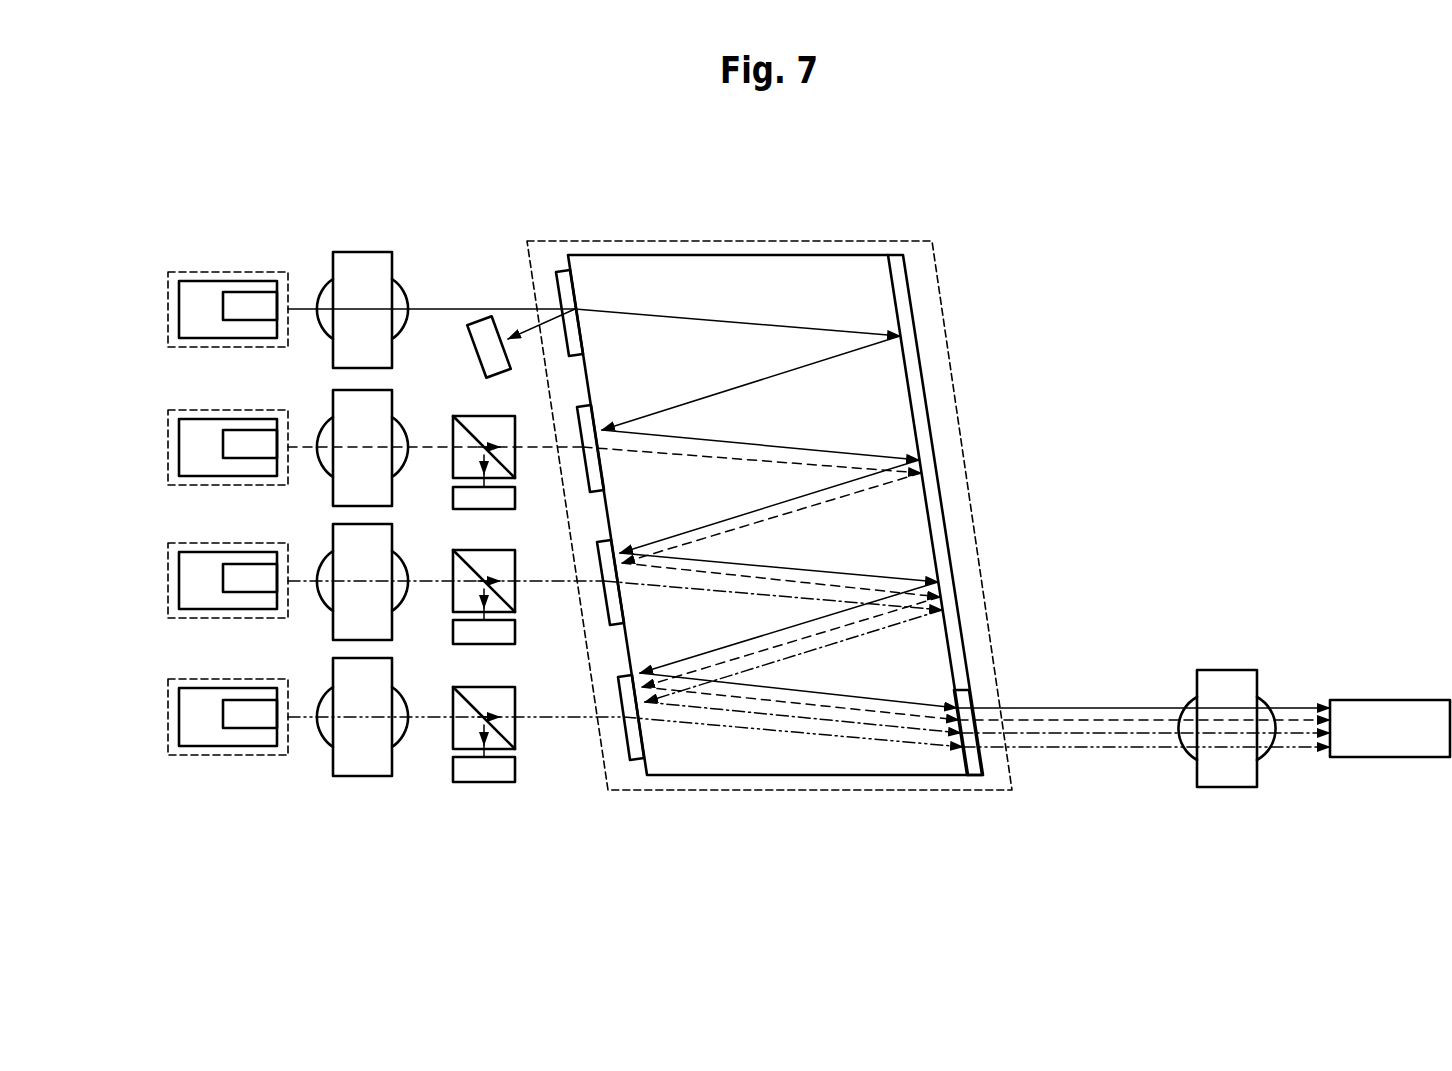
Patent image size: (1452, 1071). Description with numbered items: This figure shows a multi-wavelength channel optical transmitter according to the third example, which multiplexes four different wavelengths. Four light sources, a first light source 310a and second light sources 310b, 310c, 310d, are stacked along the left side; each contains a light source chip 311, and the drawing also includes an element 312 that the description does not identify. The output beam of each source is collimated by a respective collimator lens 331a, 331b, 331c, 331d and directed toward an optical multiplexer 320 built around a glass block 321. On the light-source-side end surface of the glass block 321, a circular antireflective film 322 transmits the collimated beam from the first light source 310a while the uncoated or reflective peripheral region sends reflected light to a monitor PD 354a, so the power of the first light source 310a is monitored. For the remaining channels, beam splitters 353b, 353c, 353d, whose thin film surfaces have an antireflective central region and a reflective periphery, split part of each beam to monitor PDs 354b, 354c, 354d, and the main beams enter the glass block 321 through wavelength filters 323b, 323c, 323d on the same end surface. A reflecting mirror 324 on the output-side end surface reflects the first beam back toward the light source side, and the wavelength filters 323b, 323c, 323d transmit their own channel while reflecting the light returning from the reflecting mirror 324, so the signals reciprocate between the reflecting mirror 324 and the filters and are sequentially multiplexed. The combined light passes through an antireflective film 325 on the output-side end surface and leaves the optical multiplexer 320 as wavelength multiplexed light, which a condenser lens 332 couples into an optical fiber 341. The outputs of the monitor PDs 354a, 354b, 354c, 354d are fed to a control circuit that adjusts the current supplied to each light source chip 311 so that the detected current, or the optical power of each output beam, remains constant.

The first light source 310a is at (168, 311).
The second light source 310b is at (168, 448).
The second light source 310c is at (168, 581).
The second light source 310d is at (168, 718).
The light source chip 311 is at (233, 322).
The light source housing 312 is at (203, 280).
The optical multiplexer 320 is at (838, 241).
The glass block 321 is at (722, 255).
The circular antireflective film 322 is at (565, 270).
The wavelength filter 323b is at (584, 464).
The wavelength filter 323c is at (603, 596).
The wavelength filter 323d is at (620, 742).
The reflecting mirror 324 is at (952, 526).
The antireflective film 325 is at (980, 700).
The collimator lens 331a is at (333, 262).
The collimator lens 331b is at (333, 398).
The collimator lens 331c is at (333, 532).
The collimator lens 331d is at (333, 666).
The condenser lens 332 is at (1224, 670).
The optical fiber 341 is at (1386, 700).
The beam splitter 353b is at (453, 430).
The beam splitter 353c is at (453, 562).
The beam splitter 353d is at (453, 698).
The monitor PD 354a is at (487, 377).
The monitor PD 354b is at (466, 509).
The monitor PD 354c is at (468, 645).
The monitor PD 354d is at (470, 783).